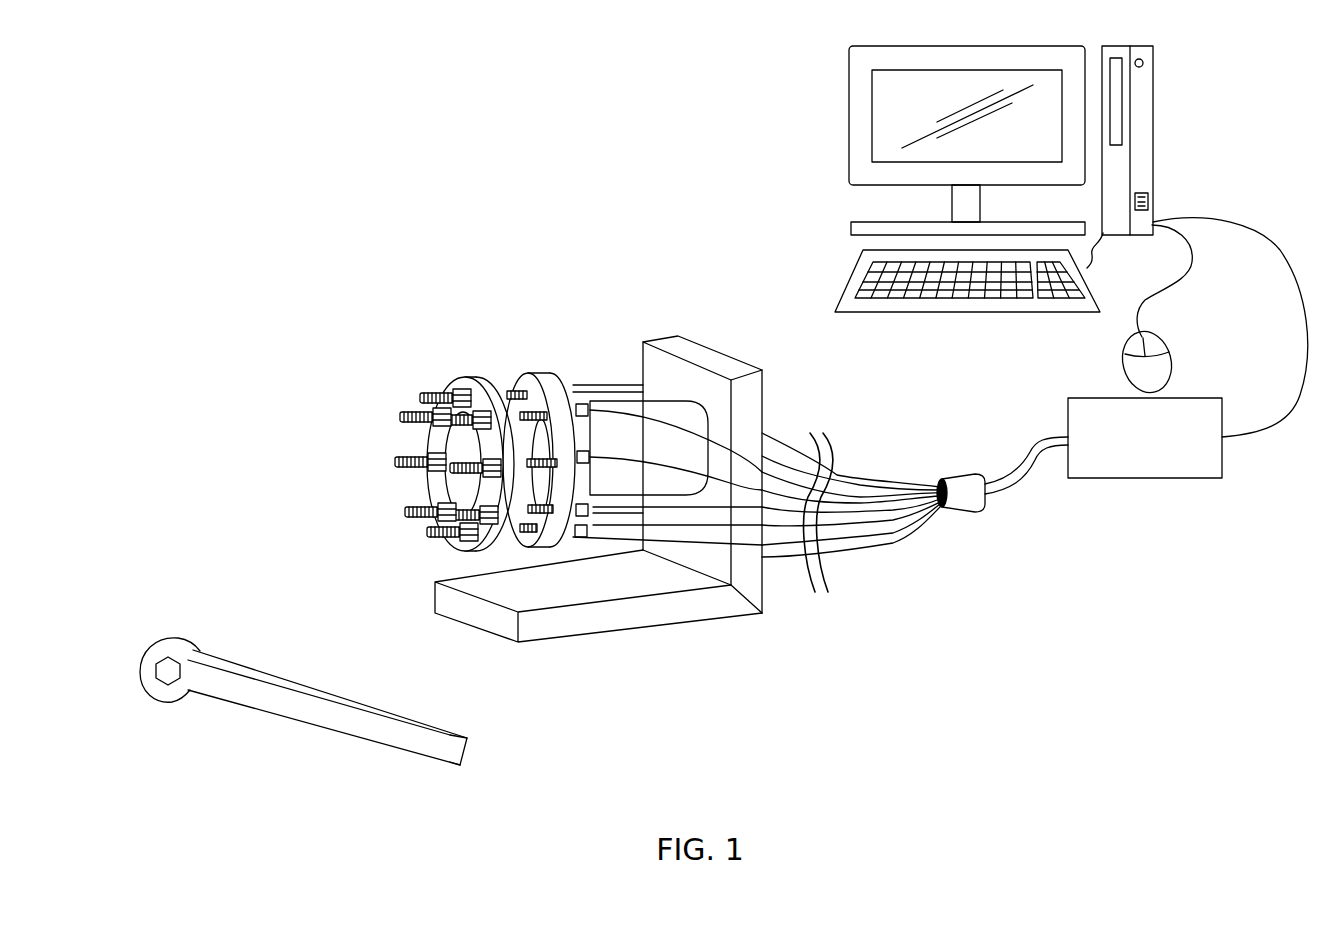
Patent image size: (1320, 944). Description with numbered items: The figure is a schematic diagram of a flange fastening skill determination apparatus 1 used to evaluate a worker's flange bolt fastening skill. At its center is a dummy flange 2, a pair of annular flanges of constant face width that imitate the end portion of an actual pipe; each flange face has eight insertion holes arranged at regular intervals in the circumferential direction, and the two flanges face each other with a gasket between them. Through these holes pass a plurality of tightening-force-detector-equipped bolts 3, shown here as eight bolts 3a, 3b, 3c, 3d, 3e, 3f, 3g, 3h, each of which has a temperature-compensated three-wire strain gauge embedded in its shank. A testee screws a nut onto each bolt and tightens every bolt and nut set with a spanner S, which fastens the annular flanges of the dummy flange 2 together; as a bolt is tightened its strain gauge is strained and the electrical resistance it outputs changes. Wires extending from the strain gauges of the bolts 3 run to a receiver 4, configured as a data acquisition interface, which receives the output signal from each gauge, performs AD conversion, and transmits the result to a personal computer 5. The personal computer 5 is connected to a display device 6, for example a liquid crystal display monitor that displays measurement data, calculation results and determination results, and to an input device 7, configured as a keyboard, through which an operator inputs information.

The flange fastening skill determination apparatus 1 is at (470, 217).
The dummy flange 2 is at (566, 314).
The tightening-force-detector-equipped bolts 3 is at (380, 499).
The bolt 3a is at (417, 399).
The bolt 3b is at (427, 533).
The bolt 3c is at (432, 480).
The bolt 3d is at (393, 463).
The bolt 3e is at (438, 427).
The bolt 3f is at (405, 512).
The bolt 3g is at (440, 523).
The bolt 3h is at (400, 418).
The receiver 4 is at (1161, 484).
The personal computer 5 is at (1156, 117).
The display device 6 is at (846, 104).
The input device 7 is at (846, 278).
The spanner S is at (340, 733).